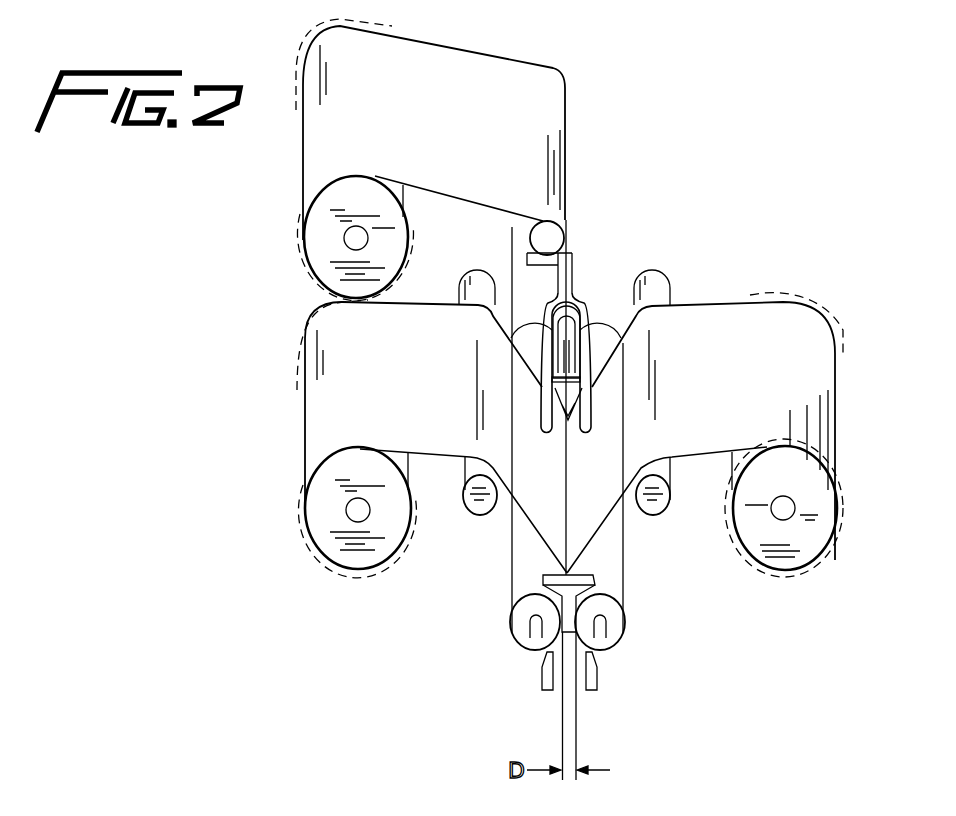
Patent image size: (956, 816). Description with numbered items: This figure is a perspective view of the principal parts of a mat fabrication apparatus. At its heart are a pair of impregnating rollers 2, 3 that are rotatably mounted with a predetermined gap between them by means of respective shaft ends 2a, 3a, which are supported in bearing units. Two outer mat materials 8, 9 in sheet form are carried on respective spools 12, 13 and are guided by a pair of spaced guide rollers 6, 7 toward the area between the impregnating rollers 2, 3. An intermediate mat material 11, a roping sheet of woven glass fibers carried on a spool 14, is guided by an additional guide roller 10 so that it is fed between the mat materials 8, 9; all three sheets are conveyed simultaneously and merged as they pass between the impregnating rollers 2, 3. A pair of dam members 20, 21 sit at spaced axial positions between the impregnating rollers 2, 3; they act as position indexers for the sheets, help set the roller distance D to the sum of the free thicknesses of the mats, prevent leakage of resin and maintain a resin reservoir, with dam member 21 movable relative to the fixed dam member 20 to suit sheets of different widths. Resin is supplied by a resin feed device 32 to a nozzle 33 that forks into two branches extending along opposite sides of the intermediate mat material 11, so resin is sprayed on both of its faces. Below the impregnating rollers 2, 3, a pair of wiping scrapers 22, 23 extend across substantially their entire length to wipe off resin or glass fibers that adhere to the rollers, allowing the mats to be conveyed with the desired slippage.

The impregnating roller 2 is at (623, 590).
The shaft end 2a is at (607, 635).
The impregnating roller 3 is at (518, 593).
The shaft end 3a is at (530, 634).
The guide roller 6 is at (662, 503).
The guide roller 7 is at (467, 507).
The mat material 8 is at (735, 312).
The mat material 9 is at (424, 312).
The guide roller 10 is at (547, 230).
The intermediate mat material 11 is at (430, 58).
The spool 12 is at (822, 578).
The spool 13 is at (318, 538).
The spool 14 is at (302, 268).
The dam member 20 is at (572, 363).
The dam member 21 is at (543, 578).
The wiping scraper 22 is at (588, 690).
The wiping scraper 23 is at (547, 690).
The resin feed device 32 is at (574, 260).
The nozzle 33 is at (588, 357).